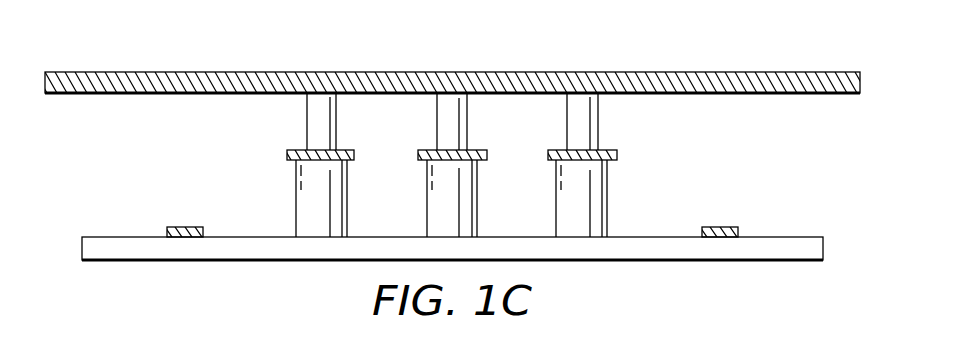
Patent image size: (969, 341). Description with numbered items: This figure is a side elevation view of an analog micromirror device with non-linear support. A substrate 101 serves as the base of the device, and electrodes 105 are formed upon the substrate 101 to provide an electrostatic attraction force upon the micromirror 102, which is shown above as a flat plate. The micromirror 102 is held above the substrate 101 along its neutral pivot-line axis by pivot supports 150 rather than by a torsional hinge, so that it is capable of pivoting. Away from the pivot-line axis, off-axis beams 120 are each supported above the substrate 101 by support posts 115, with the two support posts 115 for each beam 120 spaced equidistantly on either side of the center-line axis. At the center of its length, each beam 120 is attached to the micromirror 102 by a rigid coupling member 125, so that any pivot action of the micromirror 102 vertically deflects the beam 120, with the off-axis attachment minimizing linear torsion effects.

The substrate 101 is at (82, 247).
The micromirror 102 is at (373, 72).
The electrodes 105 is at (183, 227).
The support posts 115 is at (296, 198).
The off-axis beams 120 is at (355, 156).
The rigid coupling member 125 is at (307, 120).
The pivot supports 150 is at (467, 120).